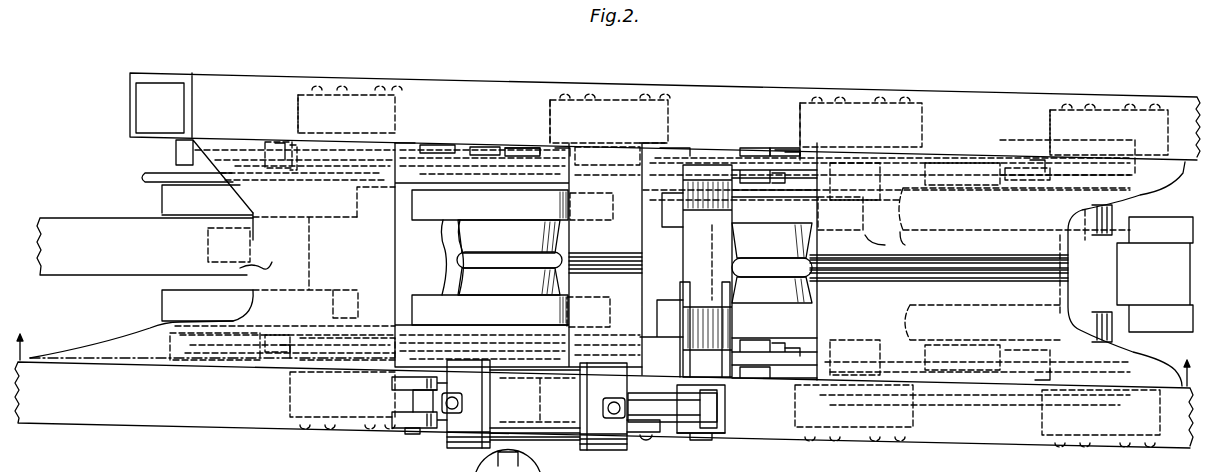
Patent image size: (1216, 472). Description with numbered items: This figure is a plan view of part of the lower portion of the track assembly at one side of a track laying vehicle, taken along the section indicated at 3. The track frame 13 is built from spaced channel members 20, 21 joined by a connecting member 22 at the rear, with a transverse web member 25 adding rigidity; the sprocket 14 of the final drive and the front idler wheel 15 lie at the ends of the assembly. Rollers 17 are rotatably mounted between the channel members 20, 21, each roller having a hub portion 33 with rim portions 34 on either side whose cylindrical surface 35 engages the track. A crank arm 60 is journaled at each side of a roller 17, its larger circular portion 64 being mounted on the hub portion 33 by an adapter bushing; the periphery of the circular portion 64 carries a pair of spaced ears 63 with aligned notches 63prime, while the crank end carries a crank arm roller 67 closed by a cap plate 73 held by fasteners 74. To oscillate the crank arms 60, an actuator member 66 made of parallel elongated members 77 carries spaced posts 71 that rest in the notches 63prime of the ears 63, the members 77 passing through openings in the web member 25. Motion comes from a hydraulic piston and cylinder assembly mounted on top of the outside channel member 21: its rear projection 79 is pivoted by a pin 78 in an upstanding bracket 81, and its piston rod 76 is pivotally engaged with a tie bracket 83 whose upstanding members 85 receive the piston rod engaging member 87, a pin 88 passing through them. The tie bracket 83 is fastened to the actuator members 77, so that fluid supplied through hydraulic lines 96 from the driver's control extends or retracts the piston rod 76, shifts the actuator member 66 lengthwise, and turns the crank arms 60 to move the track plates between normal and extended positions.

The section line 3- 3 is at (603, 348).
The track frame 13 is at (155, 438).
The sprocket 14 is at (62, 224).
The front idler wheel 15 is at (534, 405).
The rollers 17 is at (135, 179).
The channel member 20 is at (286, 80).
The outside channel member 21 is at (225, 420).
The connecting member 22 is at (240, 268).
The transverse web member 25 is at (518, 255).
The hub portion 33 is at (225, 230).
The rim portions 34 is at (742, 257).
The cylindrical surface 35 is at (155, 204).
The crank arms 60 is at (396, 137).
The ears 63 is at (228, 140).
The notches 63prime is at (520, 148).
The circular portion 64 is at (176, 150).
The actuator member 66 is at (416, 150).
The crank arm roller 67 is at (386, 88).
The posts 71 is at (283, 138).
The cap plate 73 is at (610, 88).
The fasteners 74 is at (372, 74).
The piston rod 76 is at (658, 434).
The elongated members 77 is at (472, 155).
The pin 78 is at (412, 434).
The projection 79 is at (413, 401).
The upstanding bracket 81 is at (392, 383).
The tie bracket 83 is at (675, 287).
The upstanding members 85 is at (722, 436).
The piston rod engaging member 87 is at (717, 412).
The pin 88 is at (696, 433).
The hydraulic lines 96 is at (690, 235).